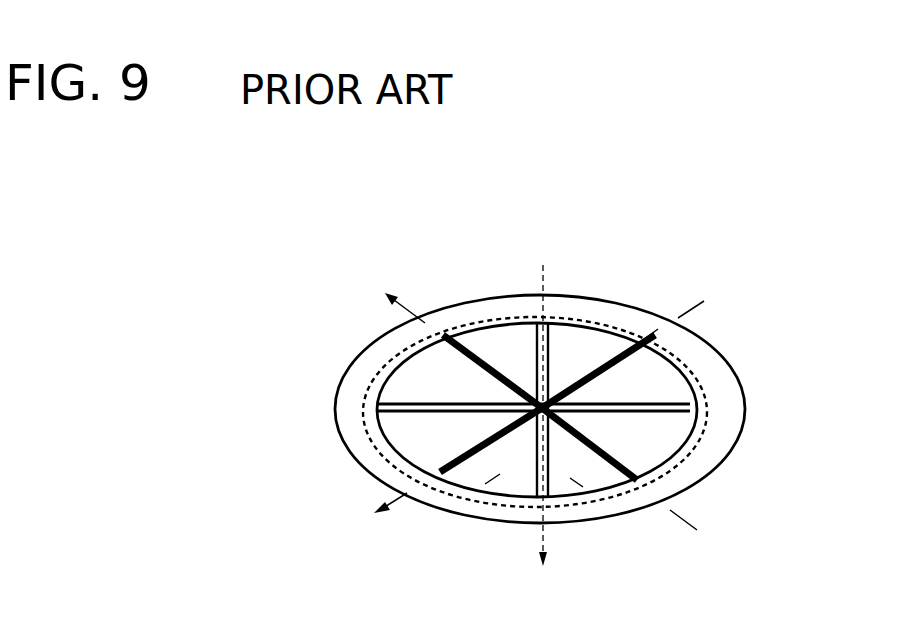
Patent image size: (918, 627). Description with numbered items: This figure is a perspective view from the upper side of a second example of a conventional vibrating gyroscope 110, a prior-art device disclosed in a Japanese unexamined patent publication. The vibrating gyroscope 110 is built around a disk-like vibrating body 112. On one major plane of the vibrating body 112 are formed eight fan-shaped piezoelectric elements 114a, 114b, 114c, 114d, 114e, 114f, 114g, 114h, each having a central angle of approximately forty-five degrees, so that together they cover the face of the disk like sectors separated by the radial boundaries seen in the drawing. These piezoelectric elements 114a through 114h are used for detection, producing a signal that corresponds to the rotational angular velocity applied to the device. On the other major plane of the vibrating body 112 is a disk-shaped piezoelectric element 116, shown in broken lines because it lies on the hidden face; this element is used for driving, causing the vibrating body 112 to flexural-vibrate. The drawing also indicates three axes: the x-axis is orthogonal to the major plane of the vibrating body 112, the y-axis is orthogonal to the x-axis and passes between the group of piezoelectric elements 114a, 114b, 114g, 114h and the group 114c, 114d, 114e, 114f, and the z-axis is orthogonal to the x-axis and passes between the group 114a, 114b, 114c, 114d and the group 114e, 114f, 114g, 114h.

The vibrating gyroscope 110 is at (529, 398).
The vibrating body 112 is at (703, 357).
The piezoelectric element 114a is at (386, 405).
The piezoelectric element 114b is at (407, 380).
The piezoelectric element 114c is at (520, 332).
The piezoelectric element 114d is at (560, 338).
The piezoelectric element 114e is at (680, 378).
The piezoelectric element 114f is at (680, 440).
The piezoelectric element 114g is at (597, 483).
The piezoelectric element 114h is at (474, 490).
The piezoelectric element 116 is at (386, 470).